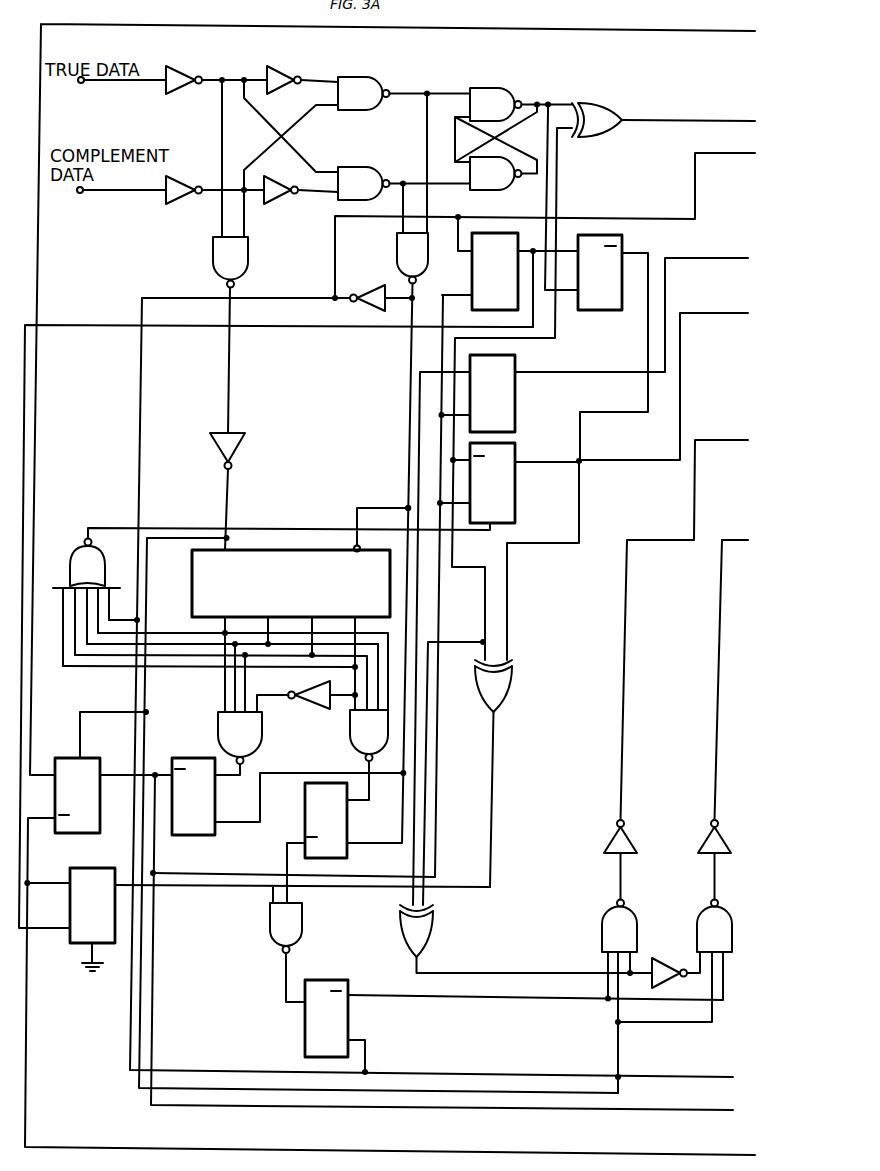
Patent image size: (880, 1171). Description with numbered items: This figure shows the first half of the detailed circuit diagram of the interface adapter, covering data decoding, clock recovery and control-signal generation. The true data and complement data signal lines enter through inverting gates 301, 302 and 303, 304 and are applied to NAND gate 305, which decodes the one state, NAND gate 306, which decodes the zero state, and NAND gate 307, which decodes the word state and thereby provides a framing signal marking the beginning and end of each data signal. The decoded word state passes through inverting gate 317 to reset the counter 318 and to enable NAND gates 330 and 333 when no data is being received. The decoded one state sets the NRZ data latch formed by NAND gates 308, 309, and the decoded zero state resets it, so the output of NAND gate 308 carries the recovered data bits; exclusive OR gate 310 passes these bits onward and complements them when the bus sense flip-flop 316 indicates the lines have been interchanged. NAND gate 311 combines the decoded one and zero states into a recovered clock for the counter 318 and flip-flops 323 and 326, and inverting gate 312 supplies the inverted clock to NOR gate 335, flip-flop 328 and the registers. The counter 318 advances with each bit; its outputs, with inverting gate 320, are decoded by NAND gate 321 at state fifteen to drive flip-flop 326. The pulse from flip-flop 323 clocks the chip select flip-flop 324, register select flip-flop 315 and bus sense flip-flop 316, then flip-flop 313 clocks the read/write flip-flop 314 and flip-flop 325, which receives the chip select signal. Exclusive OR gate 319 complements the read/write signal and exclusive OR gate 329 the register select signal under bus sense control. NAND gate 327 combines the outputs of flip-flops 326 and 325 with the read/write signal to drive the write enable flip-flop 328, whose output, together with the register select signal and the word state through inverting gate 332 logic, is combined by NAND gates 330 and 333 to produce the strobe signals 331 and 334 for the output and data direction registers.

The inverting gate 301 is at (184, 90).
The inverting gate 302 is at (277, 71).
The inverting gate 303 is at (178, 182).
The inverting gate 304 is at (279, 205).
The NAND gate 305 is at (372, 80).
The NAND gate 306 is at (364, 170).
The NAND gate 307 is at (250, 262).
The NAND gate 308 is at (500, 93).
The NAND gate 309 is at (487, 188).
The exclusive OR gate 310 is at (597, 105).
The NAND gate 311 is at (396, 236).
The inverting gate 312 is at (370, 285).
The flip-flop 313 is at (472, 280).
The read/write flip-flop 314 is at (597, 312).
The register select flip-flop 315 is at (518, 420).
The bus sense flip-flop 316 is at (518, 462).
The inverting gate 317 is at (240, 447).
The counter 318 is at (192, 588).
The exclusive OR gate 319 is at (506, 702).
The inverting gate 320 is at (305, 704).
The NAND gate 321 is at (350, 746).
The flip-flop 323 is at (195, 835).
The chip select flip-flop 324 is at (66, 757).
The flip-flop 325 is at (92, 868).
The flip-flop 326 is at (347, 824).
The NAND gate 327 is at (280, 930).
The write enable flip-flop 328 is at (305, 1020).
The exclusive OR gate 329 is at (400, 937).
The NAND gate 330 is at (605, 920).
The strobe signal 331 is at (613, 840).
The inverting gate 332 is at (218, 737).
The NAND gate 333 is at (701, 916).
The strobe signal 334 is at (707, 840).
The NOR gate 335 is at (83, 553).